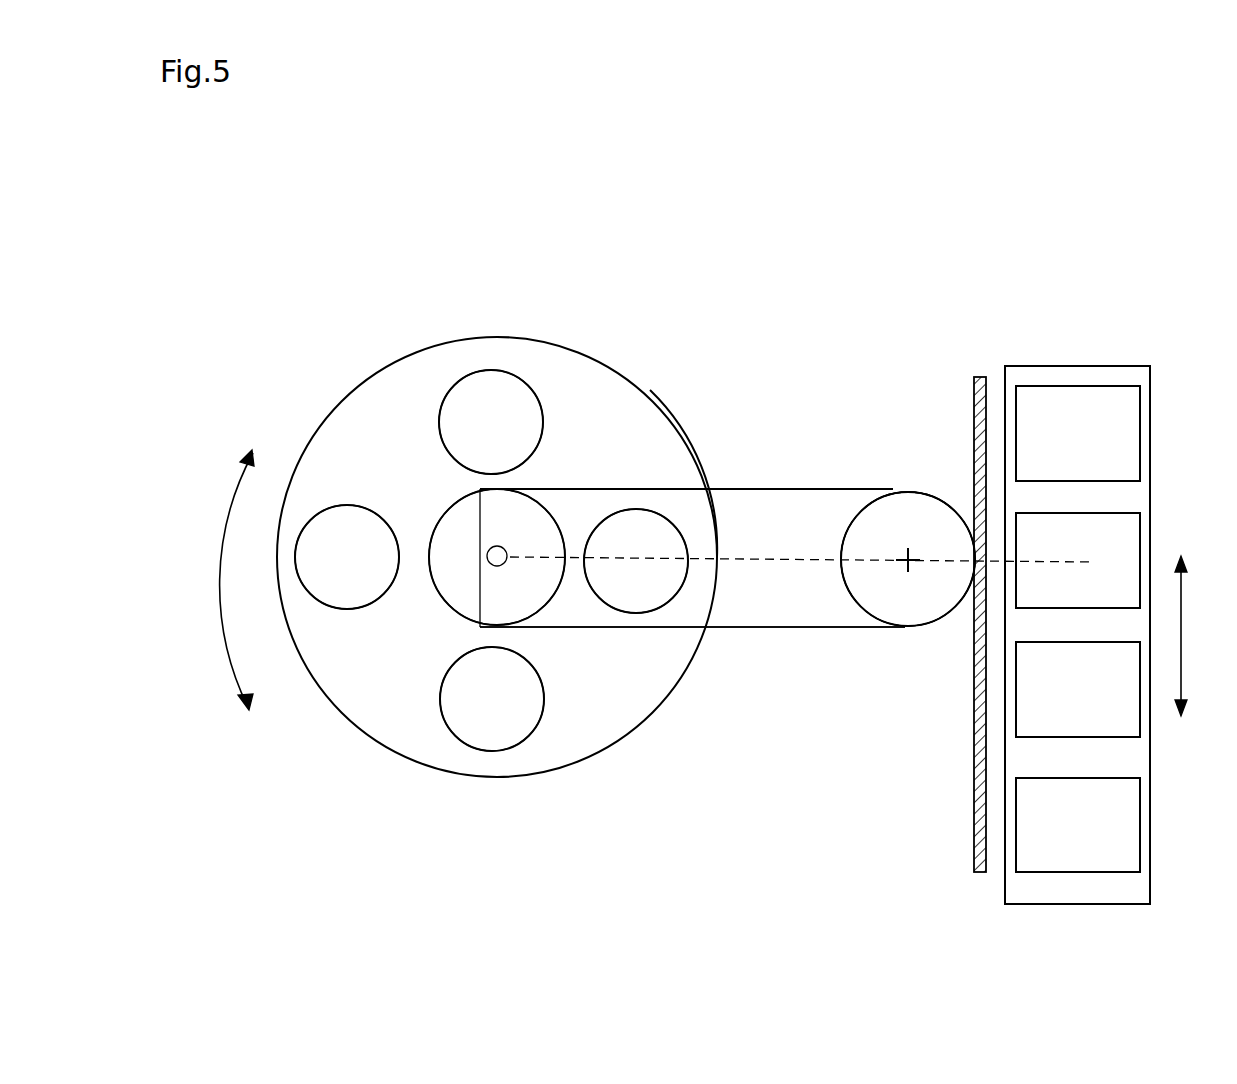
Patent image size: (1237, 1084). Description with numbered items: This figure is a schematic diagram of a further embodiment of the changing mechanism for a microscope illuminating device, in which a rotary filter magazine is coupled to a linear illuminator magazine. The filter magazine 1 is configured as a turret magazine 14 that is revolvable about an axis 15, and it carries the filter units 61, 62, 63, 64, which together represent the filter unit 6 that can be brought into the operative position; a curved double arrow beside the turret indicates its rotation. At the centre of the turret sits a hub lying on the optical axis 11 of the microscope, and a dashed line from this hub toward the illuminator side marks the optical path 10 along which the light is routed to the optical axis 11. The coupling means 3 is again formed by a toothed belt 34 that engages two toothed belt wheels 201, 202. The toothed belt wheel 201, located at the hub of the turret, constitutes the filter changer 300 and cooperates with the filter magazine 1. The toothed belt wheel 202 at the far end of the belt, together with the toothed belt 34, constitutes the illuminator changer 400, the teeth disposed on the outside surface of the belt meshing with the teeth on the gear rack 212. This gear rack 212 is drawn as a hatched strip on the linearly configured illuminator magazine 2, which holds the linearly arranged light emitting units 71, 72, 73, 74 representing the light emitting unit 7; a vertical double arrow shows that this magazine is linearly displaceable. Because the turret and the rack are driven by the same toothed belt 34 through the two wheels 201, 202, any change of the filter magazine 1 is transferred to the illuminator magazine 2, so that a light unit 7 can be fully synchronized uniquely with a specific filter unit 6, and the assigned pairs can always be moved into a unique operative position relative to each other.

The filter magazine 1 is at (573, 340).
The turret magazine 14 is at (661, 412).
The optical axis 11 is at (492, 551).
The filter changer 300 is at (563, 518).
The axis 15 is at (500, 554).
The filter unit 6 is at (520, 725).
The filter unit 61 is at (481, 412).
The filter unit 62 is at (656, 577).
The filter unit 63 is at (481, 730).
The filter unit 64 is at (335, 572).
The coupling means 3 is at (766, 490).
The toothed belt 34 is at (710, 490).
The optical path 10 is at (738, 563).
The toothed belt wheel 201 is at (528, 600).
The toothed belt wheel 202 is at (917, 618).
The illuminator changer 400 is at (868, 494).
The gear rack 212 is at (975, 710).
The illuminator magazine 2 is at (1078, 334).
The light emitting unit 7 is at (1133, 416).
The light emitting unit 71 is at (1047, 417).
The light emitting unit 72 is at (1027, 555).
The light emitting unit 73 is at (1110, 705).
The light emitting unit 74 is at (1027, 837).